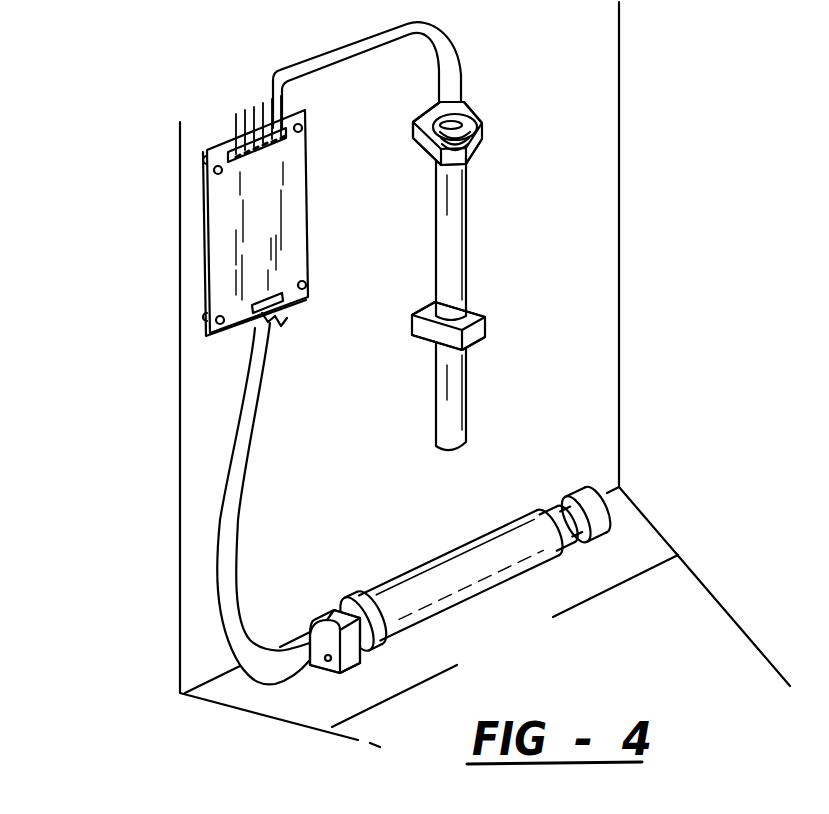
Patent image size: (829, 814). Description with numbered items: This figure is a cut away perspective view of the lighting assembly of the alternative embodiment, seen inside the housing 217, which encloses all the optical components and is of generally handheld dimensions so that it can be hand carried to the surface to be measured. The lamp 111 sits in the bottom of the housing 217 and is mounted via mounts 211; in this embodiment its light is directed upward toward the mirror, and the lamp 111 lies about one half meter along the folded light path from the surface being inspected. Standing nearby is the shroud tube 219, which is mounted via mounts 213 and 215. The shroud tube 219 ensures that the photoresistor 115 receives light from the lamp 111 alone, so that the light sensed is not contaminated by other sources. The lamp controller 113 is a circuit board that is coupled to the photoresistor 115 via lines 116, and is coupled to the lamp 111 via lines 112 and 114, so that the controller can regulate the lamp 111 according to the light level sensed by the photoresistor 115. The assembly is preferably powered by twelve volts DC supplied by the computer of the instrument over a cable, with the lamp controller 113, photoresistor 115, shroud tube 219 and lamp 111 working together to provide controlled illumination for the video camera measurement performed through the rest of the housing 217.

The lamp 111 is at (452, 600).
The lines 112 is at (149, 421).
The lamp controller 113 is at (207, 245).
The lines 114 is at (227, 445).
The photoresistor 115 is at (472, 118).
The lines 116 is at (273, 82).
The mounts 211 is at (600, 486).
The mount 213 is at (485, 327).
The mount 215 is at (487, 143).
The housing 217 is at (212, 500).
The shroud tube 219 is at (468, 265).